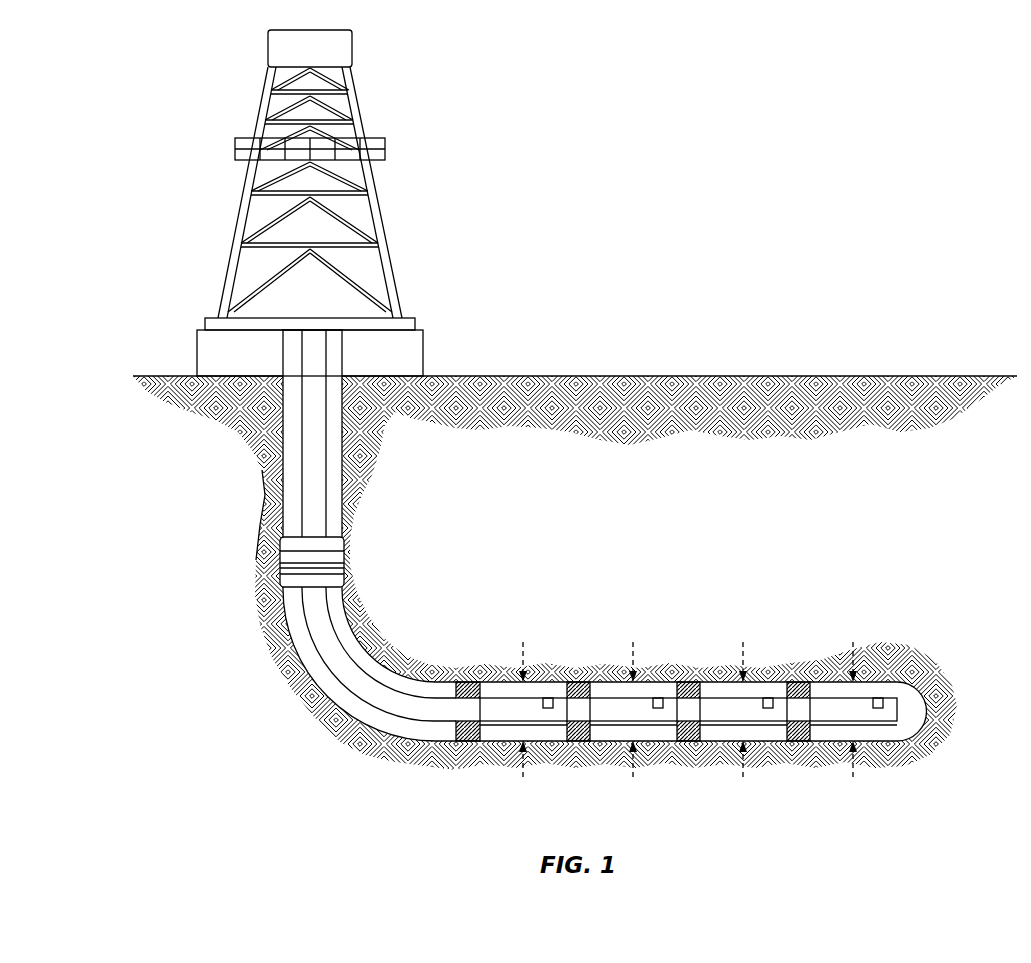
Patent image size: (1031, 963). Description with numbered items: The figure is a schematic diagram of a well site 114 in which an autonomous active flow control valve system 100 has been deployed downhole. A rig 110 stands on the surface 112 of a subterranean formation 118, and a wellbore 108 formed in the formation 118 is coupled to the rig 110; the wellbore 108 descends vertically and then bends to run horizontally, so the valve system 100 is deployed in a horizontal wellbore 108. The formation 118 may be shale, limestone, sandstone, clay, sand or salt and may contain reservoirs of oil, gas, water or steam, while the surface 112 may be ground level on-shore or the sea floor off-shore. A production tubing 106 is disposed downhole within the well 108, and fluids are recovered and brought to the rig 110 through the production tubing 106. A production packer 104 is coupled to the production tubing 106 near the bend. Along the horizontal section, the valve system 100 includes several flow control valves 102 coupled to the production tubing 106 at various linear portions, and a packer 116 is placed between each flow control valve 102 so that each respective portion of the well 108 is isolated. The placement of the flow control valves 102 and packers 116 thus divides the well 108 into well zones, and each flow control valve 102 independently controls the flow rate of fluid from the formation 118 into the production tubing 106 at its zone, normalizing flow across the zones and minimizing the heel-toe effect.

The autonomous active flow control valve system 100 is at (327, 768).
The flow control valve 102 is at (500, 692).
The production packer 104 is at (342, 547).
The production tubing 106 is at (297, 462).
The wellbore 108 is at (282, 510).
The rig 110 is at (408, 292).
The surface 112 is at (722, 375).
The well site 114 is at (761, 130).
The packer 116 is at (470, 742).
The subterranean formation 118 is at (727, 547).